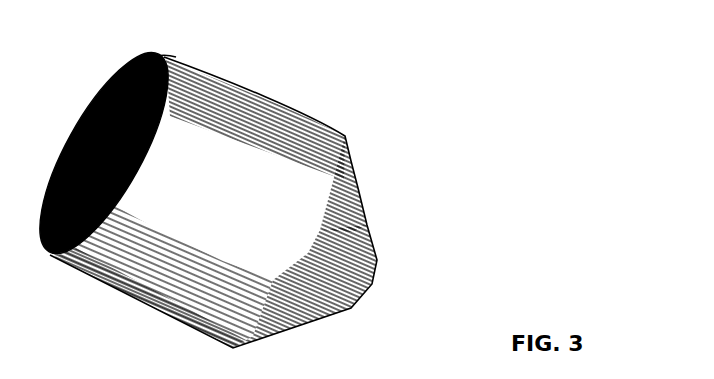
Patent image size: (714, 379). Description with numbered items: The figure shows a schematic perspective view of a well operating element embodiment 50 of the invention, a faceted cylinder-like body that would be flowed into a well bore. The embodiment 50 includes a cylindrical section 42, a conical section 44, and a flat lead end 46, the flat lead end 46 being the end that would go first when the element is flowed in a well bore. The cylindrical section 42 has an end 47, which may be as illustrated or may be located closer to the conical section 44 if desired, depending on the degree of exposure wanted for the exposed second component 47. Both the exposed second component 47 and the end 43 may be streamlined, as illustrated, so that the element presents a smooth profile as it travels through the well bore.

The cylindrical section 42 is at (258, 91).
The end 43 is at (151, 47).
The conical section 44 is at (359, 203).
The flat lead end 46 is at (365, 272).
The end 47 is at (78, 107).
The well operating element embodiment 50 is at (465, 70).